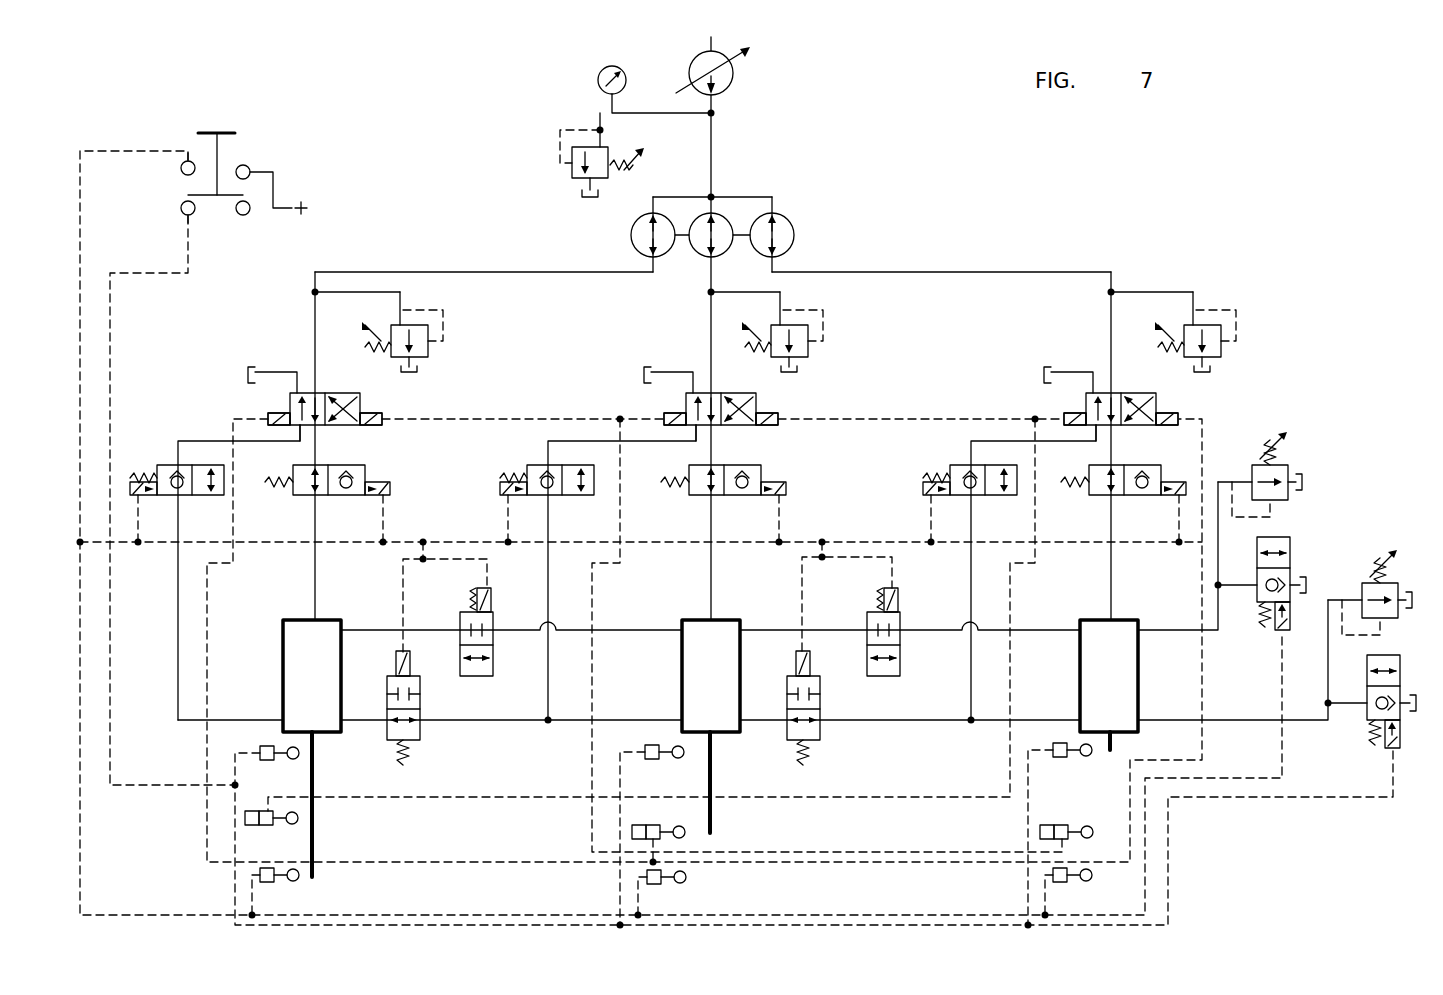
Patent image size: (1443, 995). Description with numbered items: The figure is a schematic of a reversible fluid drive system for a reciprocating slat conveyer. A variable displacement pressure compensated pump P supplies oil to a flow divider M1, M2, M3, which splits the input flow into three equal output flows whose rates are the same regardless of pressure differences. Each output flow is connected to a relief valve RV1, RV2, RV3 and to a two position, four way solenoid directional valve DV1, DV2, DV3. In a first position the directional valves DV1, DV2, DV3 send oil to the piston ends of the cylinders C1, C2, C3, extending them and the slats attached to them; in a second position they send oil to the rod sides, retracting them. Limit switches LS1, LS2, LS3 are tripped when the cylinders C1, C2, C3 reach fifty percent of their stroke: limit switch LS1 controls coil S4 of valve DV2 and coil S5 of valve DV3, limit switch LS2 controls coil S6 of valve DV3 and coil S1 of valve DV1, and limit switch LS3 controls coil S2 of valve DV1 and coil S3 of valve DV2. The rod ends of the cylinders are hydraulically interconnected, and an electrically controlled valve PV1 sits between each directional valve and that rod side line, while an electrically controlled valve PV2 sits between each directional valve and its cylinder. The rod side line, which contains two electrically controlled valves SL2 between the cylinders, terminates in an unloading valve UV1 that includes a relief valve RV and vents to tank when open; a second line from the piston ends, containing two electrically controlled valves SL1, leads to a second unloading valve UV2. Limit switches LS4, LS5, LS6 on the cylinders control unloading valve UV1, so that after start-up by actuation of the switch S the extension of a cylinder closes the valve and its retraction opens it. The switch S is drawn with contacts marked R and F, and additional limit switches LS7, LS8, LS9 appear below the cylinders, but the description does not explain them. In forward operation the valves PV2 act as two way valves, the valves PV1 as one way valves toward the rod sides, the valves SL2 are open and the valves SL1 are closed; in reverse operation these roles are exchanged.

The switch S is at (236, 131).
The return / reverse position R is at (657, 389).
The forward position F is at (173, 211).
The pump P is at (734, 80).
The relief valve RV is at (982, 391).
The flow divider M1 is at (631, 235).
The flow divider M2 is at (722, 214).
The flow divider M3 is at (789, 221).
The relief valve RV1 is at (426, 332).
The relief valve RV2 is at (806, 332).
The relief valve RV3 is at (1221, 332).
The solenoid directional valve DV1 is at (315, 404).
The solenoid directional valve DV2 is at (711, 404).
The solenoid directional valve DV3 is at (1111, 404).
The coil S1 is at (262, 410).
The coil S2 is at (387, 410).
The coil S3 is at (664, 407).
The coil S4 is at (785, 433).
The coil S5 is at (1063, 406).
The coil S6 is at (1176, 406).
The electrically controlled valve PV1 is at (575, 505).
The electrically controlled valve PV2 is at (725, 505).
The cylinder C1 is at (312, 748).
The cylinder C2 is at (711, 726).
The cylinder C3 is at (1109, 685).
The electrically controlled valve SL1 is at (701, 632).
The electrically controlled valve SL2 is at (624, 708).
The limit switch LS1 is at (272, 831).
The limit switch LS2 is at (658, 820).
The limit switch LS3 is at (1066, 820).
The limit switch LS4 is at (280, 766).
The limit switch LS5 is at (665, 767).
The limit switch LS6 is at (1075, 764).
The limit switch 7 LS7 is at (280, 888).
The limit switch 8 LS8 is at (669, 891).
The limit switch 9 LS9 is at (1075, 889).
The unloading valve UV1 is at (1405, 701).
The second unloading valve UV2 is at (1299, 583).